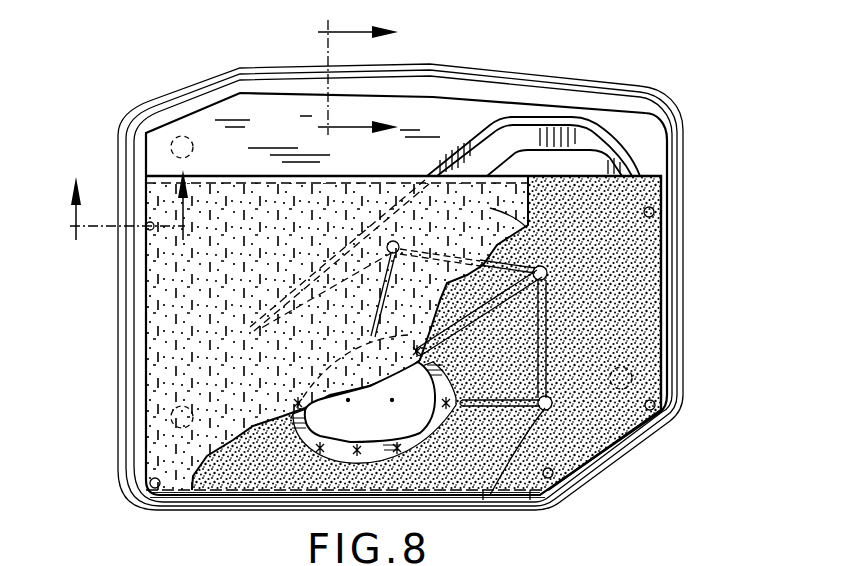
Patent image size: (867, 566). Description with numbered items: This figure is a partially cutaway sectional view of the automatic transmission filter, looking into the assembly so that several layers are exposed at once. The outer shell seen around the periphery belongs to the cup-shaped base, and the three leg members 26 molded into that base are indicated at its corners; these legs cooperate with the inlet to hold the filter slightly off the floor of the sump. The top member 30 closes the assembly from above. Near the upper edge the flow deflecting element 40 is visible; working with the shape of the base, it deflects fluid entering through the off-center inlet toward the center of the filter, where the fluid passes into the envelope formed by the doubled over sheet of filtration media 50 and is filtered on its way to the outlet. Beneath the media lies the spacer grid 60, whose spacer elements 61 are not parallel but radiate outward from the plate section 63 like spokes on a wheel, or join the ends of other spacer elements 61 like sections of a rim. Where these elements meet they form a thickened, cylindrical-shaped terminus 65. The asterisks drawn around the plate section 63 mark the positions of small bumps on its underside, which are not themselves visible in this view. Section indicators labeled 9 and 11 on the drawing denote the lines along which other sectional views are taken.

The leg members 26 is at (157, 97).
The top member 30 is at (220, 563).
The flow deflecting element 40 is at (633, 120).
The filtration media 50 is at (560, 442).
The spacer grid 60 is at (486, 505).
The spacer elements 61 is at (575, 332).
The plate section 63 is at (548, 505).
The terminus 65 is at (548, 274).
The section line 9- 9 is at (128, 227).
The section line 11- 11 is at (341, 80).